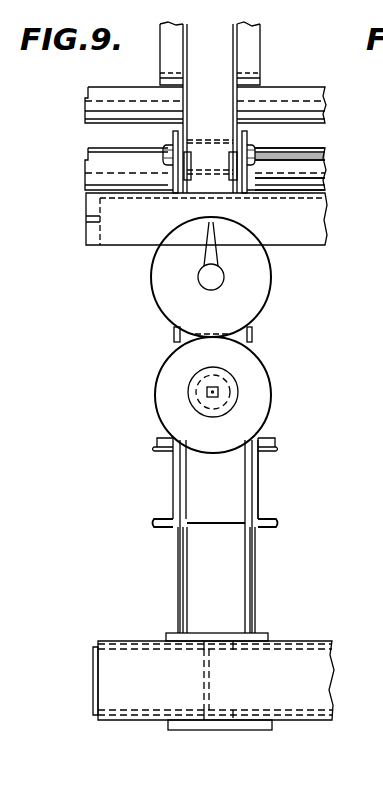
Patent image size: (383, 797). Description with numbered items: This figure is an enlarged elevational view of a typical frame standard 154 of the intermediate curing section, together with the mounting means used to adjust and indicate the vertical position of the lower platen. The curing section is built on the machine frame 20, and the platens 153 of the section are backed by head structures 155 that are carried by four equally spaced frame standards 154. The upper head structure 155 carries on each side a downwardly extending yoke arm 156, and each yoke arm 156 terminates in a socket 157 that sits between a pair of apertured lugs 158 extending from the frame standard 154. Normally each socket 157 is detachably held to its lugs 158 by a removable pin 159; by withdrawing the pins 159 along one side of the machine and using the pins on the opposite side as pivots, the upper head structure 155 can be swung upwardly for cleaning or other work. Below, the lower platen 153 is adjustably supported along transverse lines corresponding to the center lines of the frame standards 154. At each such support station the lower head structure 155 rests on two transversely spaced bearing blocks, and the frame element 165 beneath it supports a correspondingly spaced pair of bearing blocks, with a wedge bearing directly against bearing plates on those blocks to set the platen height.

The frame 20 is at (320, 693).
The platen 153 is at (88, 123).
The frame standard 154 is at (235, 598).
The head structure 155 is at (257, 67).
The yoke arm 156 is at (218, 62).
The socket 157 is at (217, 157).
The apertured lug 158 is at (325, 181).
The removable pin 159 is at (323, 168).
The frame element 165 is at (258, 506).